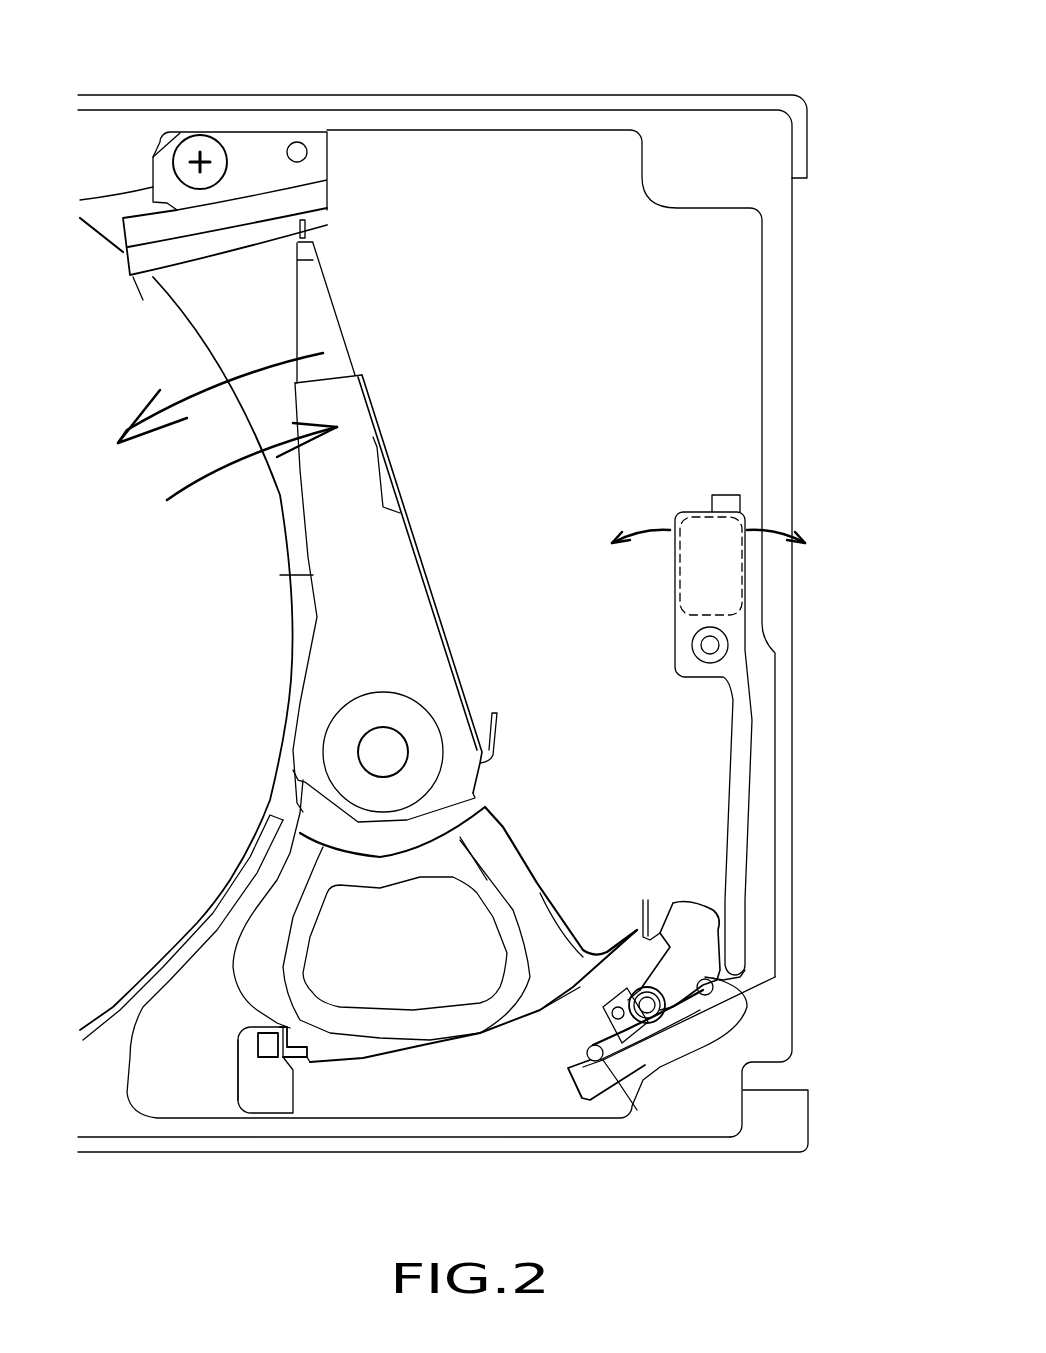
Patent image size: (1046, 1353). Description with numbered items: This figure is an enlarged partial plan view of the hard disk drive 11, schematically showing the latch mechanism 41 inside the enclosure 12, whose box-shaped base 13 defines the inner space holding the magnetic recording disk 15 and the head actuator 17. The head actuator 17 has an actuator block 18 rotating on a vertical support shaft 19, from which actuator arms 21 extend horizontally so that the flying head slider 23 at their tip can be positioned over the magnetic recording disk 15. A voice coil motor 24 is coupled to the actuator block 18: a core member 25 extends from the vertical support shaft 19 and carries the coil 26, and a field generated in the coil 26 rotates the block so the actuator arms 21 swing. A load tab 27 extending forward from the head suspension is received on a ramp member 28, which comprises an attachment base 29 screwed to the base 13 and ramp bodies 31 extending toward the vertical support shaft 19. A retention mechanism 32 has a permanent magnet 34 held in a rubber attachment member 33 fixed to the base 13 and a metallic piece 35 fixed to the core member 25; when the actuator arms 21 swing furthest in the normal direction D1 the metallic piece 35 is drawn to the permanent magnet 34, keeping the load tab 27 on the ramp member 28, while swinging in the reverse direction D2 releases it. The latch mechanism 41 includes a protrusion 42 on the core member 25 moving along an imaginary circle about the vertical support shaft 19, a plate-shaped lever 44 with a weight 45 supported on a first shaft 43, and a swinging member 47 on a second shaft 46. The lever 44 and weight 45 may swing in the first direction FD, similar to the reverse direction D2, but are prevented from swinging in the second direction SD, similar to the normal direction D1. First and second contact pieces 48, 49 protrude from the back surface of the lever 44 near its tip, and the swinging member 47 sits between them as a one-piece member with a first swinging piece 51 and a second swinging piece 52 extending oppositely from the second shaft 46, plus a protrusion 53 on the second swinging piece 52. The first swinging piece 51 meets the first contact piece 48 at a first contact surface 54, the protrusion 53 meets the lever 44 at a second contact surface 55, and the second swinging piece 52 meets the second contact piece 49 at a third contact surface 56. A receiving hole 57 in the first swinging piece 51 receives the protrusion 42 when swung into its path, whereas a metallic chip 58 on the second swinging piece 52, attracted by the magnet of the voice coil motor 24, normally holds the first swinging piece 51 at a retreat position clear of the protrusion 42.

The hard disk drive 11 is at (573, 83).
The enclosure 12 is at (793, 262).
The base 13 is at (793, 345).
The magnetic recording disk 15 is at (187, 288).
The head actuator 17 is at (260, 668).
The actuator block 18 is at (473, 777).
The vertical support shaft 19 is at (358, 758).
The actuator arm 21 is at (310, 577).
The flying head slider 23 is at (317, 255).
The voice coil motor 24 is at (257, 898).
The core member 25 is at (423, 1050).
The coil 26 is at (305, 973).
The load tab 27 is at (306, 222).
The ramp member 28 is at (180, 132).
The attachment base 29 is at (240, 132).
The ramp body 31 is at (142, 280).
The retention mechanism 32 is at (273, 1093).
The attachment member 33 is at (238, 1063).
The permanent magnet 34 is at (258, 1050).
The metallic piece 35 is at (297, 1062).
The latch mechanism 41 is at (763, 978).
The protrusion 42 is at (625, 932).
The first shaft 43 is at (700, 647).
The lever 44 is at (753, 707).
The weight 45 is at (743, 595).
The second shaft 46 is at (672, 1030).
The swinging member 47 is at (718, 912).
The first contact piece 48 is at (708, 992).
The second contact piece 49 is at (627, 1067).
The first swinging piece 51 is at (687, 903).
The second swinging piece 52 is at (572, 1078).
The protrusion 53 is at (625, 1017).
The first contact surface 54 is at (713, 978).
The second contact surface 55 is at (615, 1014).
The third contact surface 56 is at (580, 1060).
The receiving hole 57 is at (645, 900).
The metallic chip 58 is at (580, 987).
The normal direction D1 is at (207, 463).
The reverse direction D2 is at (262, 367).
The first direction FD is at (648, 527).
The second direction SD is at (787, 527).